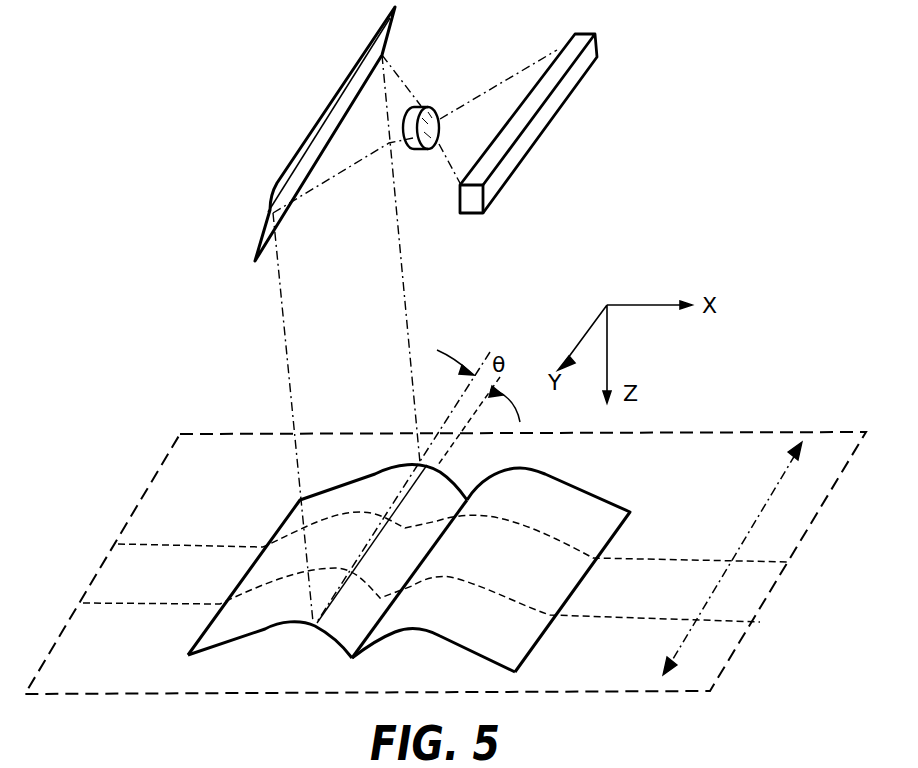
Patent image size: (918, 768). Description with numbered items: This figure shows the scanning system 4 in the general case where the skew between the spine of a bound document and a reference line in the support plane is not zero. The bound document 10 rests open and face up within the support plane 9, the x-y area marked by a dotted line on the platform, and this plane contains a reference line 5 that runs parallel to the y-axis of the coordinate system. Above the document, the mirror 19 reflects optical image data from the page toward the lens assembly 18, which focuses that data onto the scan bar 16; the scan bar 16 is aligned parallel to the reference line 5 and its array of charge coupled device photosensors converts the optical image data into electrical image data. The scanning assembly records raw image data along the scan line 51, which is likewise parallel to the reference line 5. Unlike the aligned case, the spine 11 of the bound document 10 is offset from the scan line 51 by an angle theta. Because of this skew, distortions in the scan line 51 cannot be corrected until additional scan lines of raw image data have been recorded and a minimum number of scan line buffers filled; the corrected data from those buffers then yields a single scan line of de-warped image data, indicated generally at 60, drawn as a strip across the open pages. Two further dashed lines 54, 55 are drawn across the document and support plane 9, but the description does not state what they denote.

The scanning system 4 is at (207, 267).
The reference line 5 is at (780, 480).
The support plane 9 is at (107, 562).
The bound document 10 is at (409, 573).
The spine 11 is at (397, 626).
The scan bar 16 is at (525, 160).
The lens assembly 18 is at (425, 106).
The mirror 19 is at (371, 53).
The scan line 51 is at (397, 500).
The raster line 54 is at (658, 558).
The raster line 55 is at (652, 622).
The de-warped image data scan line 60 is at (392, 550).